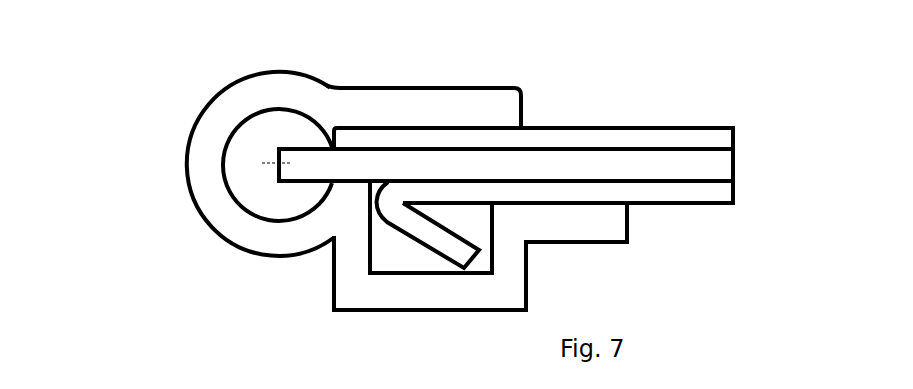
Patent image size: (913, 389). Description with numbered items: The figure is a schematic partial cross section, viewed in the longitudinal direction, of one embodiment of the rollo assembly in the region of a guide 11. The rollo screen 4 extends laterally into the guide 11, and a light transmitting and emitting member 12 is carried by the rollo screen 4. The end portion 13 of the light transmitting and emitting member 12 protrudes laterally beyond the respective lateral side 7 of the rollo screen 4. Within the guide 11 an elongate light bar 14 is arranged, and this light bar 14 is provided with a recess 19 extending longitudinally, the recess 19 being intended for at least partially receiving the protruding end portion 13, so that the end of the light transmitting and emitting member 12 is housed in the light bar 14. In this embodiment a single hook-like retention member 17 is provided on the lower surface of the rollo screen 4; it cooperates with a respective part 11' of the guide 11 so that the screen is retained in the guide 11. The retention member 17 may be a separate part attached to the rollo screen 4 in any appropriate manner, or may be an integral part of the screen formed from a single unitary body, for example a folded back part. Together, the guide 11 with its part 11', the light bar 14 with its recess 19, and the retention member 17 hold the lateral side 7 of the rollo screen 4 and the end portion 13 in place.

The rollo screen 4 is at (714, 145).
The lateral side of the rollo screen 7 is at (360, 138).
The guide 11 is at (353, 200).
The part of the guide 11' is at (514, 245).
The light transmitting and emitting member 12 is at (705, 167).
The end portion of the light transmitting and emitting member 13 is at (310, 168).
The elongate light bar 14 is at (247, 168).
The retention member 17 is at (440, 235).
The recess 19 is at (292, 147).